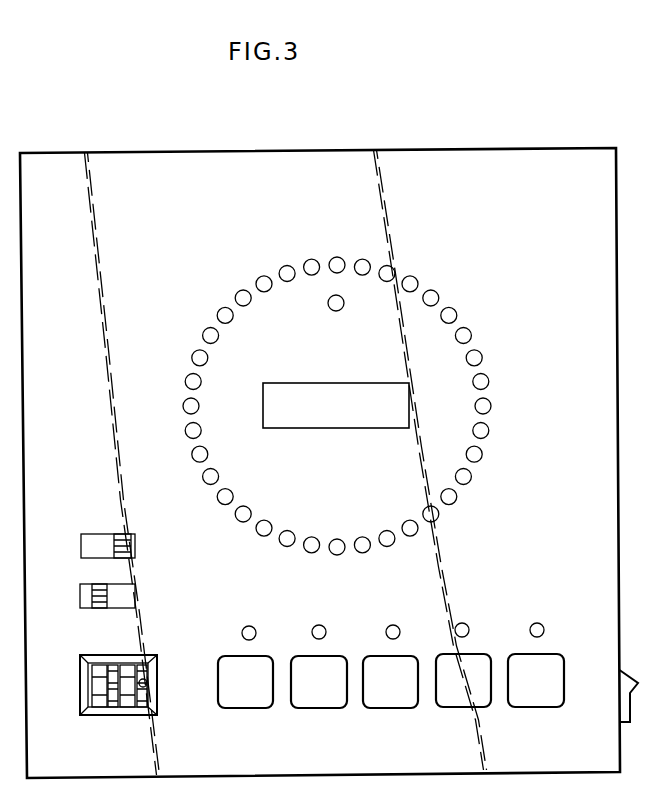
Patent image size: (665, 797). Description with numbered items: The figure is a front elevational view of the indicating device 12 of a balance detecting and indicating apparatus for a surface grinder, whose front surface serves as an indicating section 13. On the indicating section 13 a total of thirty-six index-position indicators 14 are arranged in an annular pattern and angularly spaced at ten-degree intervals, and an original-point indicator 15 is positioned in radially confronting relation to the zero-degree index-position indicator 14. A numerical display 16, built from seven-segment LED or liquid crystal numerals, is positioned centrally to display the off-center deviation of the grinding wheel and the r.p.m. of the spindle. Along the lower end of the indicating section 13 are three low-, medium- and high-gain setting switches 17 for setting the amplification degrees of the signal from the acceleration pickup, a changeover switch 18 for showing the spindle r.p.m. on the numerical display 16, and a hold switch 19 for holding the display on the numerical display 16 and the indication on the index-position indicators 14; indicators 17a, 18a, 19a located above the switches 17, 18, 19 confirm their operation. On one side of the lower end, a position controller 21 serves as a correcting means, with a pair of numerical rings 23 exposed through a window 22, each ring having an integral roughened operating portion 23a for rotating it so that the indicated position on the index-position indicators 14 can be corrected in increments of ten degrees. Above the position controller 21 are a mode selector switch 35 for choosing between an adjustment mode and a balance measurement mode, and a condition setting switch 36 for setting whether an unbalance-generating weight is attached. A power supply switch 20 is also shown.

The indicating device 12 is at (455, 150).
The indicating section 13 is at (543, 150).
The index-position indicators 14 is at (388, 265).
The original-point indicator 15 is at (330, 308).
The numerical display 16 is at (301, 383).
The gain setting switches 17 is at (375, 708).
The indicators 17a is at (393, 625).
The changeover switch 18 is at (465, 708).
The indicator 18a is at (462, 623).
The hold switch 19 is at (535, 708).
The indicator 19a is at (537, 623).
The power supply switch 20 is at (631, 703).
The position controller 21 is at (114, 689).
The window 22 is at (148, 688).
The numerical rings 23 is at (97, 663).
The operating portion 23a is at (140, 707).
The mode selector switch 35 is at (137, 545).
The condition setting switch 36 is at (137, 595).